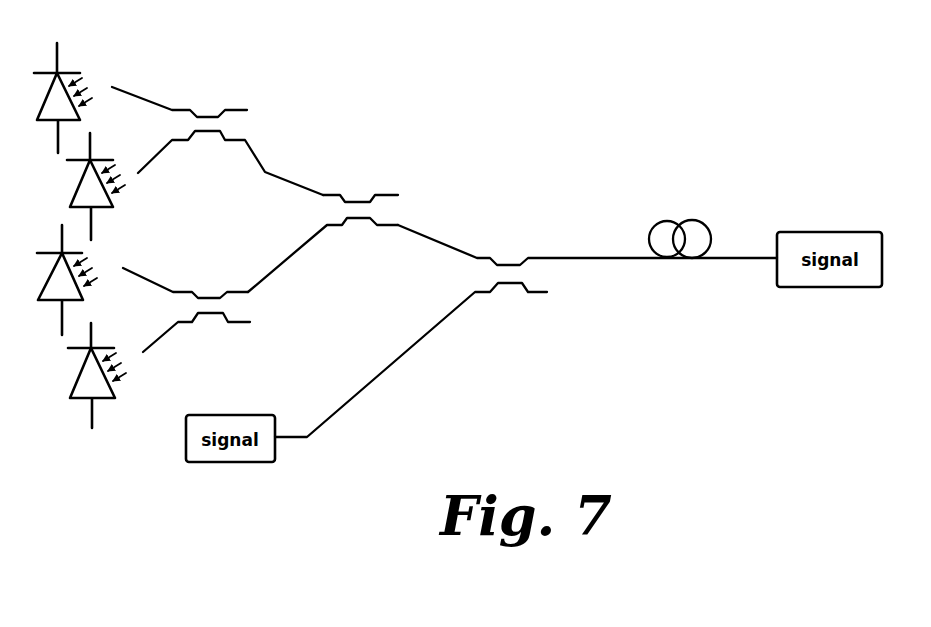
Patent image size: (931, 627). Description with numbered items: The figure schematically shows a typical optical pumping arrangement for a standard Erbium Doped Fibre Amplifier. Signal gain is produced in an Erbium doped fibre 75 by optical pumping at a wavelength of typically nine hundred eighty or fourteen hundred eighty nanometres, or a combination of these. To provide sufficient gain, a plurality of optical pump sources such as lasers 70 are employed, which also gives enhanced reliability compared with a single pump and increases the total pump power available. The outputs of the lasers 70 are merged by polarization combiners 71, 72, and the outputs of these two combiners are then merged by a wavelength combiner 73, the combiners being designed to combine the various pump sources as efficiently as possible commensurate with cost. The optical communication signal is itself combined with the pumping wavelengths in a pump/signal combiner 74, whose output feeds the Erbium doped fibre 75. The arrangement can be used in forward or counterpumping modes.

The optical pump sources 70 is at (106, 425).
The polarization combiner 71 is at (225, 334).
The polarization combiner 72 is at (217, 126).
The wavelength combiner 73 is at (354, 214).
The pump/signal combiner 74 is at (526, 331).
The Erbium doped fibre 75 is at (696, 213).